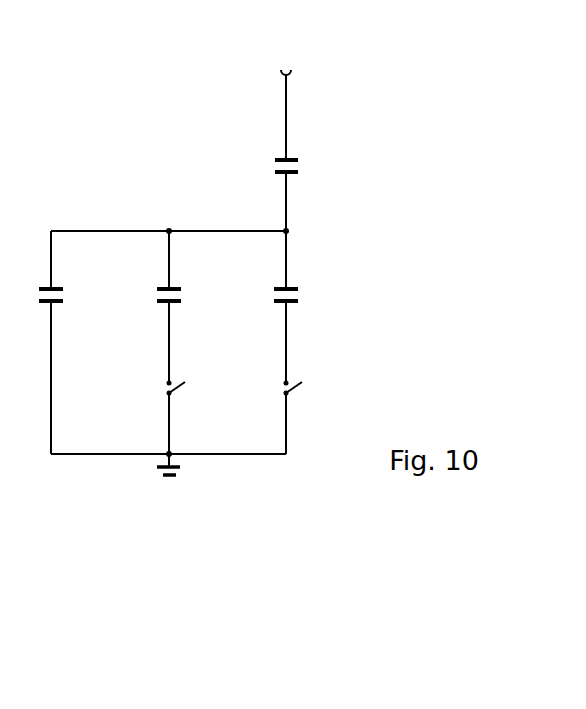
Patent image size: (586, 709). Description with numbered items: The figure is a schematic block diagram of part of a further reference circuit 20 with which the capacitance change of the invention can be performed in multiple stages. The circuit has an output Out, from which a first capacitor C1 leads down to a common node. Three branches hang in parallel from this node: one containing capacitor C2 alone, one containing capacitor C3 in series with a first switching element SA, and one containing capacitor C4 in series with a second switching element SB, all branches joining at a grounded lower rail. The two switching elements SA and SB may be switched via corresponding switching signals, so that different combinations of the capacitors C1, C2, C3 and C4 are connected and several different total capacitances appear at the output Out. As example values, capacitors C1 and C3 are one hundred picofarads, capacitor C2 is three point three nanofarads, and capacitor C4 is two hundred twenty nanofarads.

The reference circuit 20 is at (93, 22).
The output Out is at (292, 101).
The capacitor C1 is at (302, 182).
The capacitor C2 is at (68, 282).
The capacitor C3 is at (183, 307).
The capacitor C4 is at (301, 307).
The switching element SA is at (188, 418).
The switching element SB is at (304, 418).